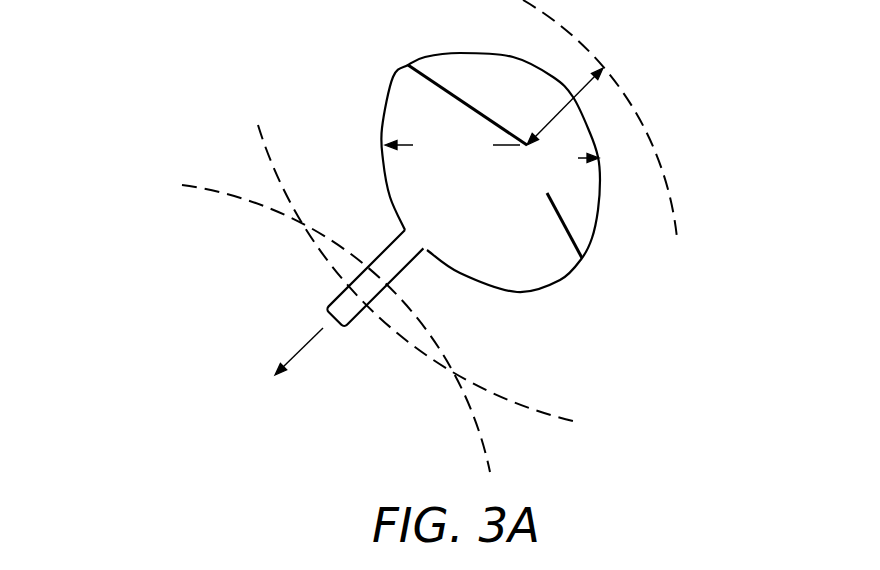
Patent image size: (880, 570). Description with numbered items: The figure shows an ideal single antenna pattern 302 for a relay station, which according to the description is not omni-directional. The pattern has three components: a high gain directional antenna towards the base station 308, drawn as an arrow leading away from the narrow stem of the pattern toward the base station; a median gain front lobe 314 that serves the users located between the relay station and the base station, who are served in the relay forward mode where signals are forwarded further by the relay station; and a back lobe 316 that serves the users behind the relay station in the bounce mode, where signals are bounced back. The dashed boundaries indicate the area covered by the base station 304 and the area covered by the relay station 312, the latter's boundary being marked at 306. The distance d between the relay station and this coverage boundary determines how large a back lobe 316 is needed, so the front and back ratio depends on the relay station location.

The ideal single antenna pattern 302 is at (358, 47).
The area covered by base station 304 is at (112, 205).
The relay station coverage boundary 306 is at (613, 50).
The high gain directional antenna towards BS 308 is at (241, 380).
The area covered by relay station 312 is at (720, 250).
The front lobe 314 is at (452, 118).
The back lobe 316 is at (538, 196).